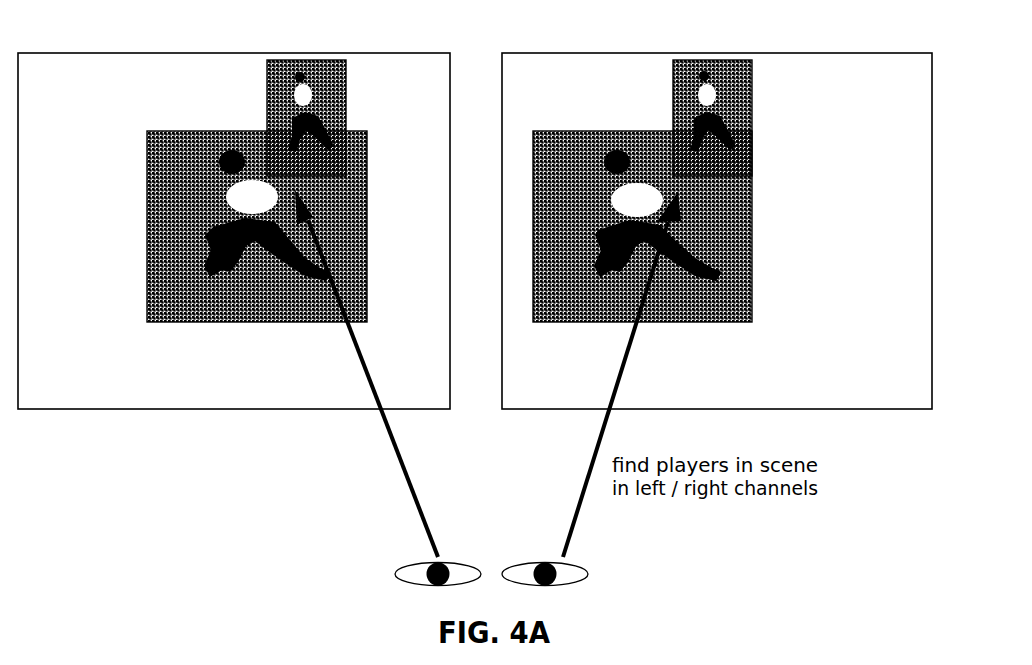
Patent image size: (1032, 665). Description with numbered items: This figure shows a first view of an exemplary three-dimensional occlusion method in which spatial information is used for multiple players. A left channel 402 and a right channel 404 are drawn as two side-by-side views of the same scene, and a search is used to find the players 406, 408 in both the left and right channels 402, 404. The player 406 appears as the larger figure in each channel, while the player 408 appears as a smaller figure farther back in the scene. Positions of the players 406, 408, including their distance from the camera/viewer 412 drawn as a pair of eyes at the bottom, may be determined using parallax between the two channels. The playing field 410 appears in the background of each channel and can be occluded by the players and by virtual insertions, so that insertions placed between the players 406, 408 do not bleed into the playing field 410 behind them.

The left channel 402 is at (245, 53).
The right channel 404 is at (723, 53).
The player 406 is at (200, 177).
The player 408 is at (292, 88).
The playing field 410 is at (108, 365).
The camera/viewer 412 is at (603, 573).